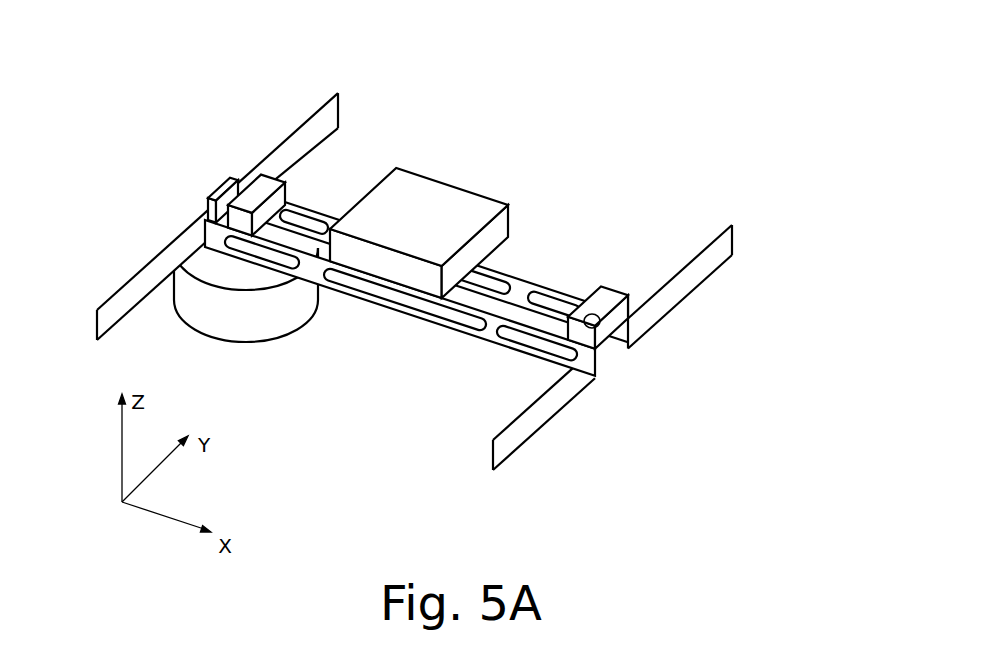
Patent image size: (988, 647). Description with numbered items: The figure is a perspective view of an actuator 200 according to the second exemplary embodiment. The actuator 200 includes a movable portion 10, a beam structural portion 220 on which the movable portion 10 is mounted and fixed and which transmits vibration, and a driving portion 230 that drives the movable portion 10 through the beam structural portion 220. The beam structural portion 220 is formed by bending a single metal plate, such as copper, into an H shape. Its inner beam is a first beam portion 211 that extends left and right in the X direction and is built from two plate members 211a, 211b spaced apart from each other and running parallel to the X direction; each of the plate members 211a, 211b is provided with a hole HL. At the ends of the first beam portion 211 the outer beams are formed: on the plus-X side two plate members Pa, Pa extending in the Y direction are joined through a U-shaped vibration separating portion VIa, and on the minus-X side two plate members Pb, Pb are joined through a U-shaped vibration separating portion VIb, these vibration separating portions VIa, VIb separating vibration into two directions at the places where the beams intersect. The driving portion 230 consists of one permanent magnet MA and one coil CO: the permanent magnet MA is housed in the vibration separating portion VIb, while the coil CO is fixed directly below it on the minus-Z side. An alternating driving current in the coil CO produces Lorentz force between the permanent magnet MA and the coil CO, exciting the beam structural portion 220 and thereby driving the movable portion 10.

The actuator 200 is at (394, 263).
The movable portion 10 is at (460, 200).
The beam structural portion 220 is at (655, 251).
The driving portion 230 is at (151, 165).
The first beam portion 211 is at (416, 300).
The plate member 211a is at (543, 292).
The plate member 211b is at (490, 336).
The hole HL is at (311, 230).
The plate member Pa is at (522, 448).
The plate member Pb is at (313, 129).
The permanent magnet MA is at (224, 181).
The vibration separating portion VIa is at (592, 312).
The vibration separating portion VIb is at (245, 180).
The coil CO is at (225, 322).